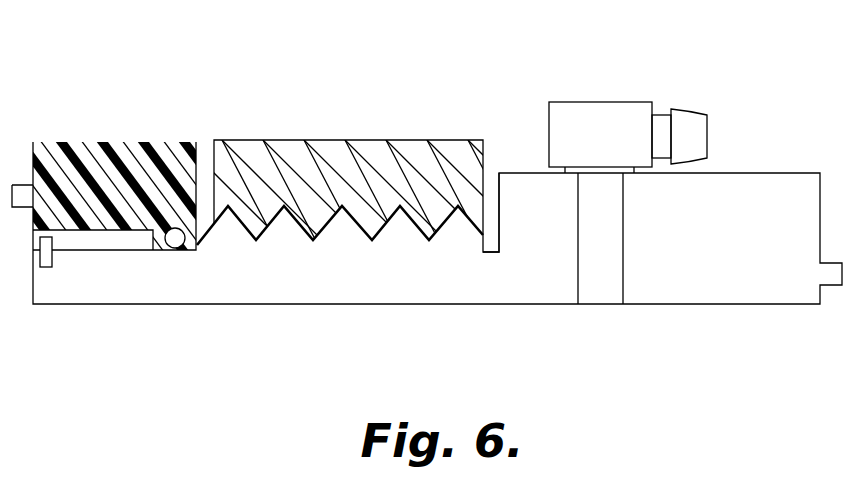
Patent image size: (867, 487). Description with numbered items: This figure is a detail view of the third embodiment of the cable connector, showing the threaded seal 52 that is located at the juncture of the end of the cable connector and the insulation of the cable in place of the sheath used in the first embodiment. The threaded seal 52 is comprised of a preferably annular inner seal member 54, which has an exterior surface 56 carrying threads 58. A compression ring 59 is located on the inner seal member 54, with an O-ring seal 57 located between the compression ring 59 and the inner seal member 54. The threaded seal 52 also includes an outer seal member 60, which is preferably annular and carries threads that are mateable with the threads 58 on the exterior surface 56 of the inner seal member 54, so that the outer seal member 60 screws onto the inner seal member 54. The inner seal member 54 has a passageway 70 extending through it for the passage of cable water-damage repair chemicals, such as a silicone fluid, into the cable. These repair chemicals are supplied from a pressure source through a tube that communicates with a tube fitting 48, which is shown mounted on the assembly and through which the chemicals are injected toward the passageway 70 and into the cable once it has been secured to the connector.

The threaded seal 52 is at (421, 193).
The inner seal member 54 is at (253, 277).
The exterior surface 56 is at (487, 253).
The O-ring seal 57 is at (182, 252).
The threads 58 is at (330, 220).
The compression ring 59 is at (120, 142).
The outer seal member 60 is at (322, 142).
The tube fitting 48 is at (597, 109).
The passageway 70 is at (613, 260).